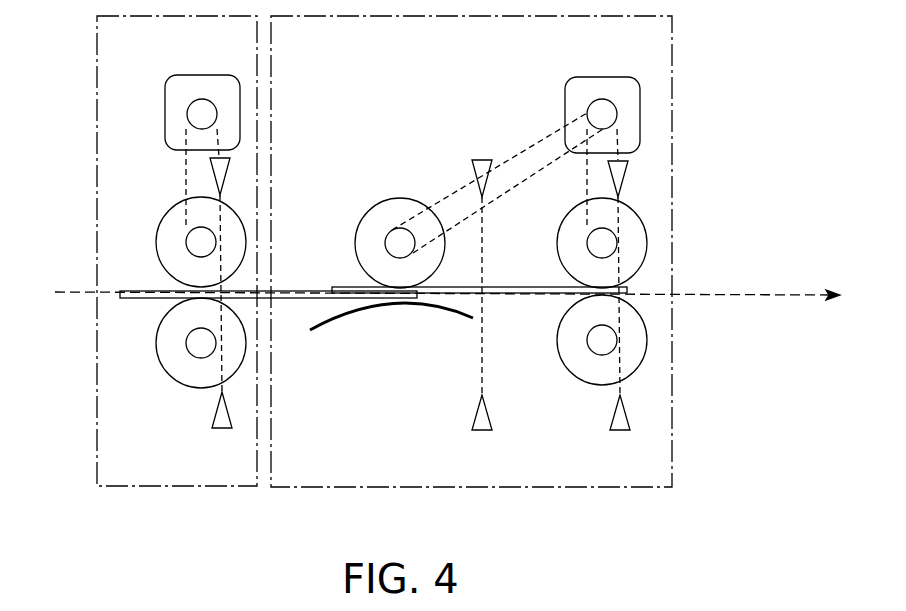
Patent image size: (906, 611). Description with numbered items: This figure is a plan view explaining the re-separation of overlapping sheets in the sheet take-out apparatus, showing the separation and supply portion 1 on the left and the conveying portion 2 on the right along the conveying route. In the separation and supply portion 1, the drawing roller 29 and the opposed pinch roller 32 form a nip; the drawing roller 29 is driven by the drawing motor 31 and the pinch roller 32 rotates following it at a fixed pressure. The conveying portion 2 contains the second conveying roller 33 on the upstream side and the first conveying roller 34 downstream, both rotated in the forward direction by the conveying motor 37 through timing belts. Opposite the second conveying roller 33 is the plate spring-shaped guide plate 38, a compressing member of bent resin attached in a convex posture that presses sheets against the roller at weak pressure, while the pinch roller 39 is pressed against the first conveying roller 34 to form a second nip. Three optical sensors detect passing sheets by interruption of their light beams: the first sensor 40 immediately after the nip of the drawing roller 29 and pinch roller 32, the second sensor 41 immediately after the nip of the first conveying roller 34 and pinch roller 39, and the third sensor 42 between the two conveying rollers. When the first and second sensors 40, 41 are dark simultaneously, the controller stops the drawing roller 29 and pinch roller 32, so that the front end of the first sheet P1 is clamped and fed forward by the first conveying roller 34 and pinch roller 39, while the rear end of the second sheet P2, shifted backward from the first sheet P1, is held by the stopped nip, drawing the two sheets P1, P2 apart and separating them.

The separation and supply portion 1 is at (97, 145).
The conveying portion 2 is at (672, 178).
The drawing roller 29 is at (174, 226).
The drawing motor 31 is at (205, 82).
The pinch roller 32 is at (171, 362).
The second conveying roller 33 is at (398, 199).
The first conveying roller 34 is at (567, 243).
The conveying motor 37 is at (604, 84).
The guide plate 38 is at (370, 312).
The pinch roller 39 is at (581, 372).
The first sensor 40 is at (221, 428).
The second sensor 41 is at (620, 430).
The third sensor 42 is at (482, 430).
The first sheet P1 is at (345, 287).
The second sheet P2 is at (142, 300).